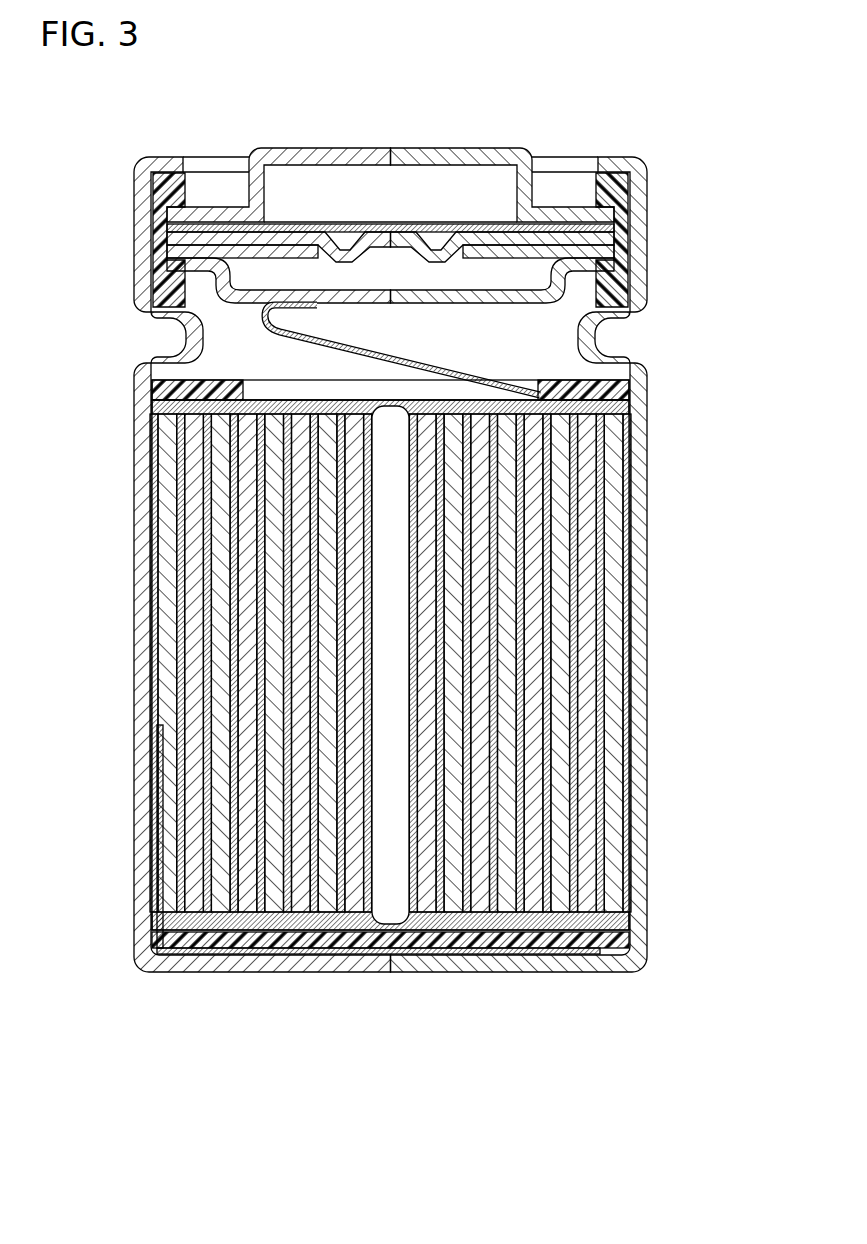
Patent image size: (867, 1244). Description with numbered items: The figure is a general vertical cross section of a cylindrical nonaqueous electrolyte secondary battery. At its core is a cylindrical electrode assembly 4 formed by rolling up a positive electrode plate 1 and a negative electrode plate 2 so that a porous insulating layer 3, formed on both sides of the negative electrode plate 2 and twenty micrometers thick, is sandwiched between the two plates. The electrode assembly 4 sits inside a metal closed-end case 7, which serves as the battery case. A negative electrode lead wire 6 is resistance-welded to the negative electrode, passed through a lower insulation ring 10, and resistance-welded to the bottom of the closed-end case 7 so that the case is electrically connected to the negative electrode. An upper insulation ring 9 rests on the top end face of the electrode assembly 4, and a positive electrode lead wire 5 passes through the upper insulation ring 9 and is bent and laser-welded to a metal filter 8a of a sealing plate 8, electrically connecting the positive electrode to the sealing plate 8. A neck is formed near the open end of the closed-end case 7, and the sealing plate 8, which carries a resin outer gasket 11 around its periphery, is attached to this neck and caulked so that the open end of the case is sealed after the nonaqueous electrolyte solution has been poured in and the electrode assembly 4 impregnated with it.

The positive electrode plate 1 is at (615, 652).
The negative electrode plate 2 is at (587, 683).
The porous insulating layer 3 is at (635, 612).
The electrode assembly 4 is at (464, 665).
The positive electrode lead wire 5 is at (410, 362).
The negative electrode lead wire 6 is at (423, 955).
The metal closed-end case 7 is at (142, 578).
The sealing plate 8 is at (358, 156).
The metal filter 8a is at (483, 297).
The upper insulation ring 9 is at (630, 391).
The lower insulation ring 10 is at (620, 940).
The outer gasket 11 is at (633, 200).